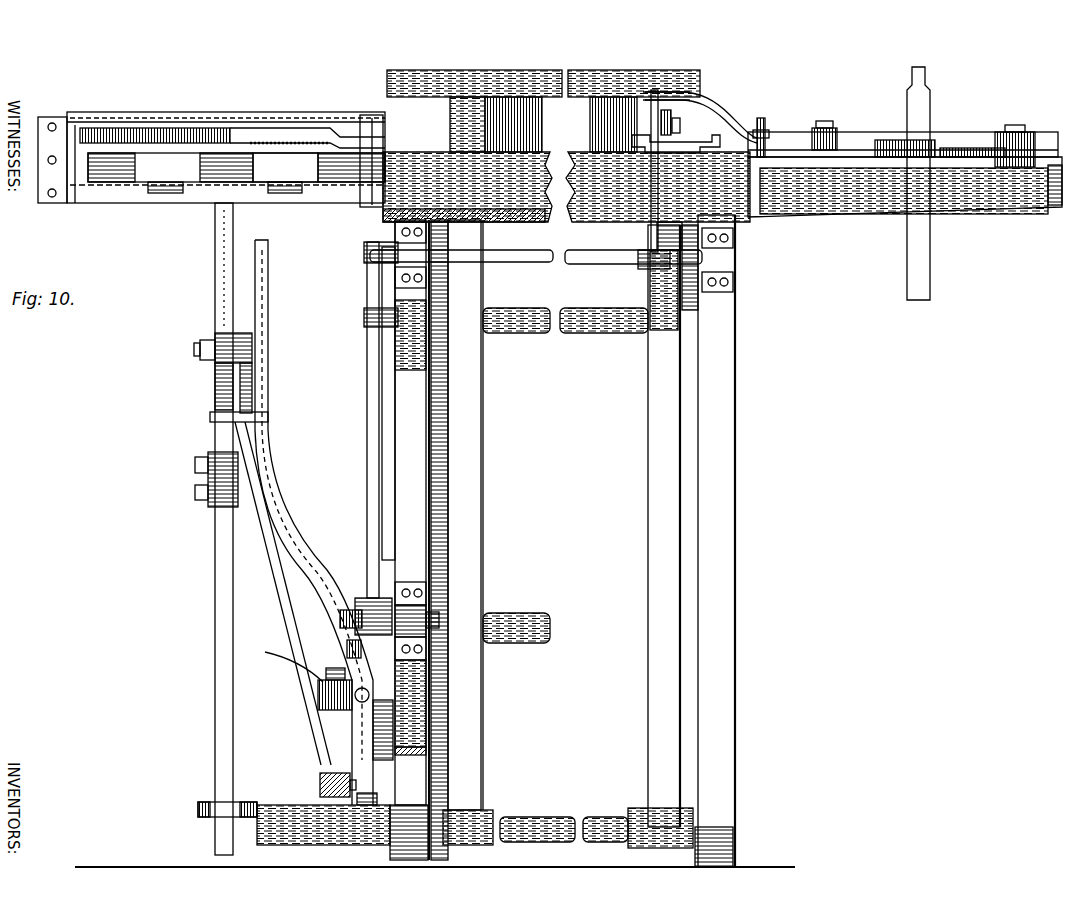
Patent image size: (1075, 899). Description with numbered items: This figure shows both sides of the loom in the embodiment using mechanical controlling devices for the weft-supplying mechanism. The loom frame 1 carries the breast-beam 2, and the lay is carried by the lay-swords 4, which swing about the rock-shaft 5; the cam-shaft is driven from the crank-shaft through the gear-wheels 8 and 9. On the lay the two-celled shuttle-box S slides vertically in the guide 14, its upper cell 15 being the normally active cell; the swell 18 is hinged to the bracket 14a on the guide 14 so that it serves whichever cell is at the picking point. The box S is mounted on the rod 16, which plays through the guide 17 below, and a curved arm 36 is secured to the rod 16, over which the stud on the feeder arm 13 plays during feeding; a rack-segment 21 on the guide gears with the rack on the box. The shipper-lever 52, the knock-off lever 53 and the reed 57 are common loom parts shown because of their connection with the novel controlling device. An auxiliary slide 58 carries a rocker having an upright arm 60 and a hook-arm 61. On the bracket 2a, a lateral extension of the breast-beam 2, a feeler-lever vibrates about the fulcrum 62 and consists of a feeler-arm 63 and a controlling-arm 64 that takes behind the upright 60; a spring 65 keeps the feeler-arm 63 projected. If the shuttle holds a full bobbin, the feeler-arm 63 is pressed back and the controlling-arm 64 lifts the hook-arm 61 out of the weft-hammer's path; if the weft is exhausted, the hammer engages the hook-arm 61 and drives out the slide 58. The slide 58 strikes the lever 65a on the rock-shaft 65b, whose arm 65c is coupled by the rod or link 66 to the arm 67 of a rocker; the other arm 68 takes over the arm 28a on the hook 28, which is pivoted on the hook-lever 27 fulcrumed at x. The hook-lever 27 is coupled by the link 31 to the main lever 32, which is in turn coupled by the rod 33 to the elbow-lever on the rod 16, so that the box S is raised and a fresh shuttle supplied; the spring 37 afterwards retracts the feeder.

The two-celled shuttle-box S is at (226, 147).
The guide 14 is at (236, 167).
The bracket 14a is at (60, 196).
The upper shuttle-cell 15 is at (285, 167).
The swell 18 is at (280, 137).
The reed 57 is at (413, 98).
The breast-beam 2 is at (555, 168).
The bracket 2a is at (990, 167).
The auxiliary slide 58 is at (632, 136).
The upright arm 60 is at (647, 100).
The hook-arm 61 is at (722, 115).
The controlling-arm 64 is at (712, 110).
The spring 65 is at (764, 122).
The lever 65a is at (655, 241).
The rock-shaft 65b is at (522, 263).
The arm 65c is at (383, 280).
The fulcrum 62 is at (829, 121).
The feeler-arm 63 is at (875, 134).
The shipper-lever 52 is at (931, 103).
The knock-off lever 53 is at (958, 152).
The rod 16 is at (218, 283).
The rod or link 66 is at (372, 382).
The gear-wheel 8 is at (450, 377).
The gear-wheel 9 is at (450, 552).
The lay-swords 4 is at (485, 507).
The loom frame 1 is at (735, 490).
The rock-shaft 5 is at (538, 816).
The curved arm 36 is at (218, 437).
The link or rod 33 is at (245, 445).
The arm 13 is at (268, 477).
The rocker arm 67 is at (398, 570).
The rocker arm 68 is at (360, 592).
The rack-segment 21 is at (338, 640).
The fulcrum x is at (284, 657).
The arm 28a is at (350, 642).
The hook-lever 27 is at (317, 692).
The link 31 is at (320, 725).
The spring 37 is at (373, 682).
The hook 28 is at (427, 652).
The guide 17 is at (237, 800).
The main lever 32 is at (320, 790).